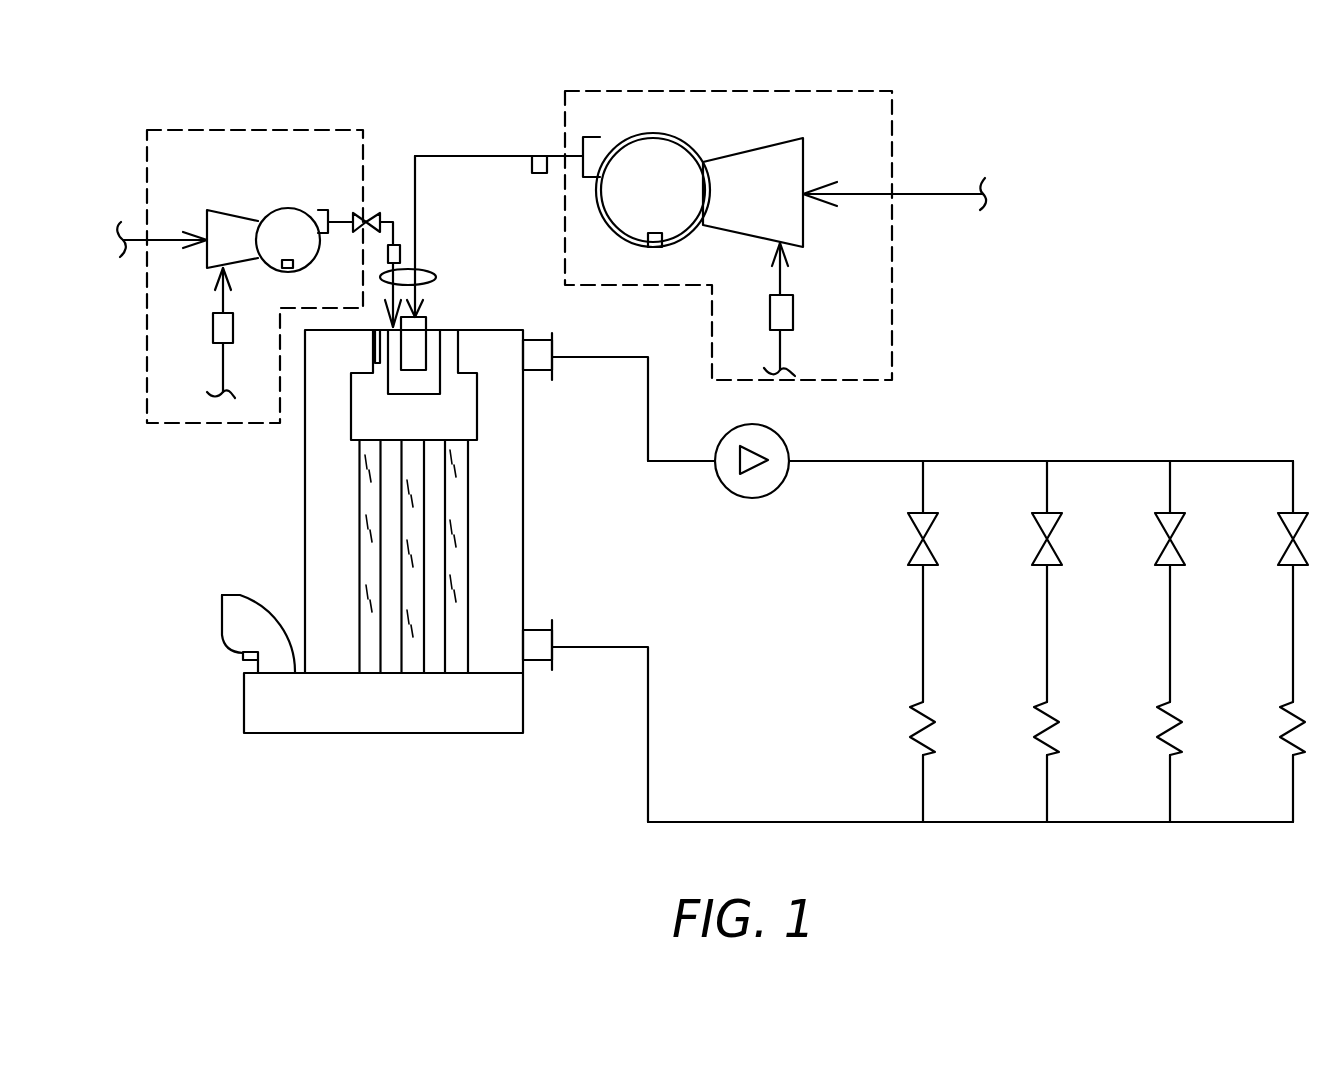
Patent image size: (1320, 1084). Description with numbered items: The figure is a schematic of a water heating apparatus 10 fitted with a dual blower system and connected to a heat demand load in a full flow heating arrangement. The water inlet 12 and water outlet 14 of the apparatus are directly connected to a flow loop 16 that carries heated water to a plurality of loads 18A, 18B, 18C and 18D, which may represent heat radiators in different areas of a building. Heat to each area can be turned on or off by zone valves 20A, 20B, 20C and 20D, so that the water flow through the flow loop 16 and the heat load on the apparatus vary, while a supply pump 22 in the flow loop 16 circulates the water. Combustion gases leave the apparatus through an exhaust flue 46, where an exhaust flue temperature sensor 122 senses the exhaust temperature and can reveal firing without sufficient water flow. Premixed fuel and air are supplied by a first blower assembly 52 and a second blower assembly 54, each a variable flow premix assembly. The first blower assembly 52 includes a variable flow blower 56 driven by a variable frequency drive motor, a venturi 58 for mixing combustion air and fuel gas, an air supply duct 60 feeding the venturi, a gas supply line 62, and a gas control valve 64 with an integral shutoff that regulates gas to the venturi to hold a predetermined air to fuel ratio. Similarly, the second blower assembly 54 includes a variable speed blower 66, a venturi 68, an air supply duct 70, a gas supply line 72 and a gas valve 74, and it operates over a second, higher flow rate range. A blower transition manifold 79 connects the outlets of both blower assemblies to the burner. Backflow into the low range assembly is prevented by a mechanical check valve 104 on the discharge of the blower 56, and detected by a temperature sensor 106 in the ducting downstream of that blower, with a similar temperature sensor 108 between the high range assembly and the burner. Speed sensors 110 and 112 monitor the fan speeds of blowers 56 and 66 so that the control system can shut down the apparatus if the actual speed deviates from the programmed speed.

The water heating apparatus 10 is at (234, 482).
The water inlet 12 is at (553, 633).
The water outlet 14 is at (553, 360).
The flow loop 16 is at (853, 461).
The load 18A is at (913, 715).
The load 18B is at (1038, 715).
The load 18C is at (1162, 715).
The load 18D is at (1285, 715).
The zone valve 20A is at (915, 530).
The zone valve 20B is at (1040, 530).
The zone valve 20C is at (1162, 530).
The zone valve 20D is at (1285, 530).
The supply pump 22 is at (752, 498).
The exhaust flue 46 is at (222, 617).
The first blower assembly 52 is at (286, 128).
The second blower assembly 54 is at (892, 112).
The variable flow blower 56 is at (286, 226).
The venturi 58 is at (237, 225).
The air supply duct 60 is at (170, 243).
The gas supply line 62 is at (223, 362).
The gas control valve 64 is at (213, 322).
The variable speed blower 66 is at (653, 155).
The venturi 68 is at (768, 165).
The air supply duct 70 is at (940, 196).
The gas supply line 72 is at (785, 275).
The gas valve 74 is at (793, 308).
The blower transition manifold 79 is at (436, 277).
The mechanical check valve 104 is at (366, 212).
The temperature sensor 106 is at (400, 253).
The temperature sensor 108 is at (533, 171).
The speed sensor 110 is at (288, 268).
The speed sensor 112 is at (652, 245).
The exhaust flue temperature sensor 122 is at (243, 656).